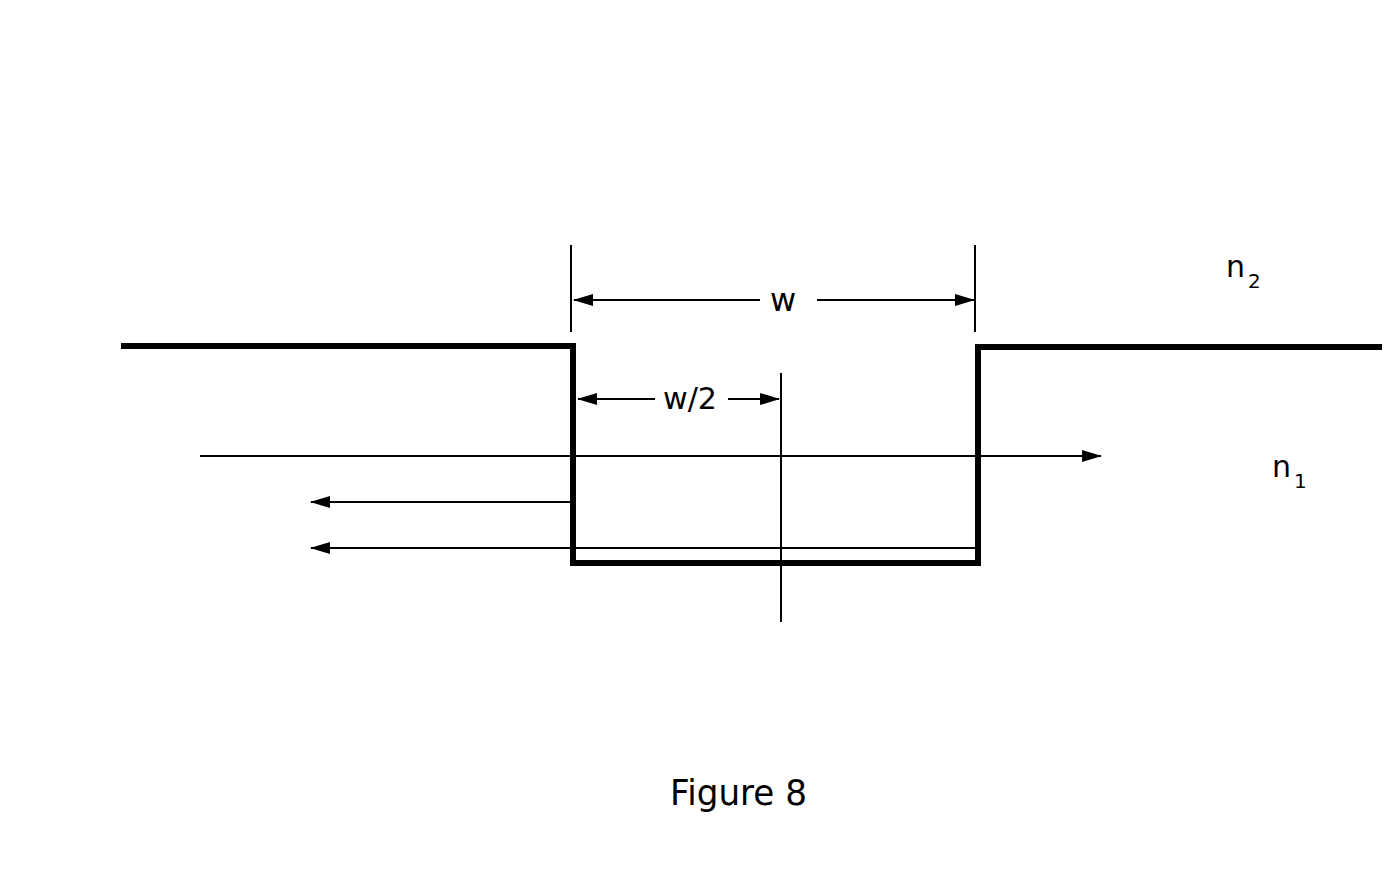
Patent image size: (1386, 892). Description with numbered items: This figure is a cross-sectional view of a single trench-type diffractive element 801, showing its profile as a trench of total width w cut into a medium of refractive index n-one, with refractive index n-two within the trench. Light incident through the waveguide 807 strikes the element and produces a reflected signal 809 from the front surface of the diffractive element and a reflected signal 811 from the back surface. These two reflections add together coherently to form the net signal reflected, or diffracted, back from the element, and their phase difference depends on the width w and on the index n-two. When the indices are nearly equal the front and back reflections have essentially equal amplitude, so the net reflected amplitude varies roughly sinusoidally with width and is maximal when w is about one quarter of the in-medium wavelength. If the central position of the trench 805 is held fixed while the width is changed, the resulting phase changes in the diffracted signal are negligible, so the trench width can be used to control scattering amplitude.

The trench-type diffractive element 801 is at (530, 197).
The central position of the trench 805 is at (782, 597).
The waveguide 807 is at (253, 456).
The reflected signal from the front surface 809 is at (402, 503).
The reflected signal from the back surface 811 is at (447, 549).